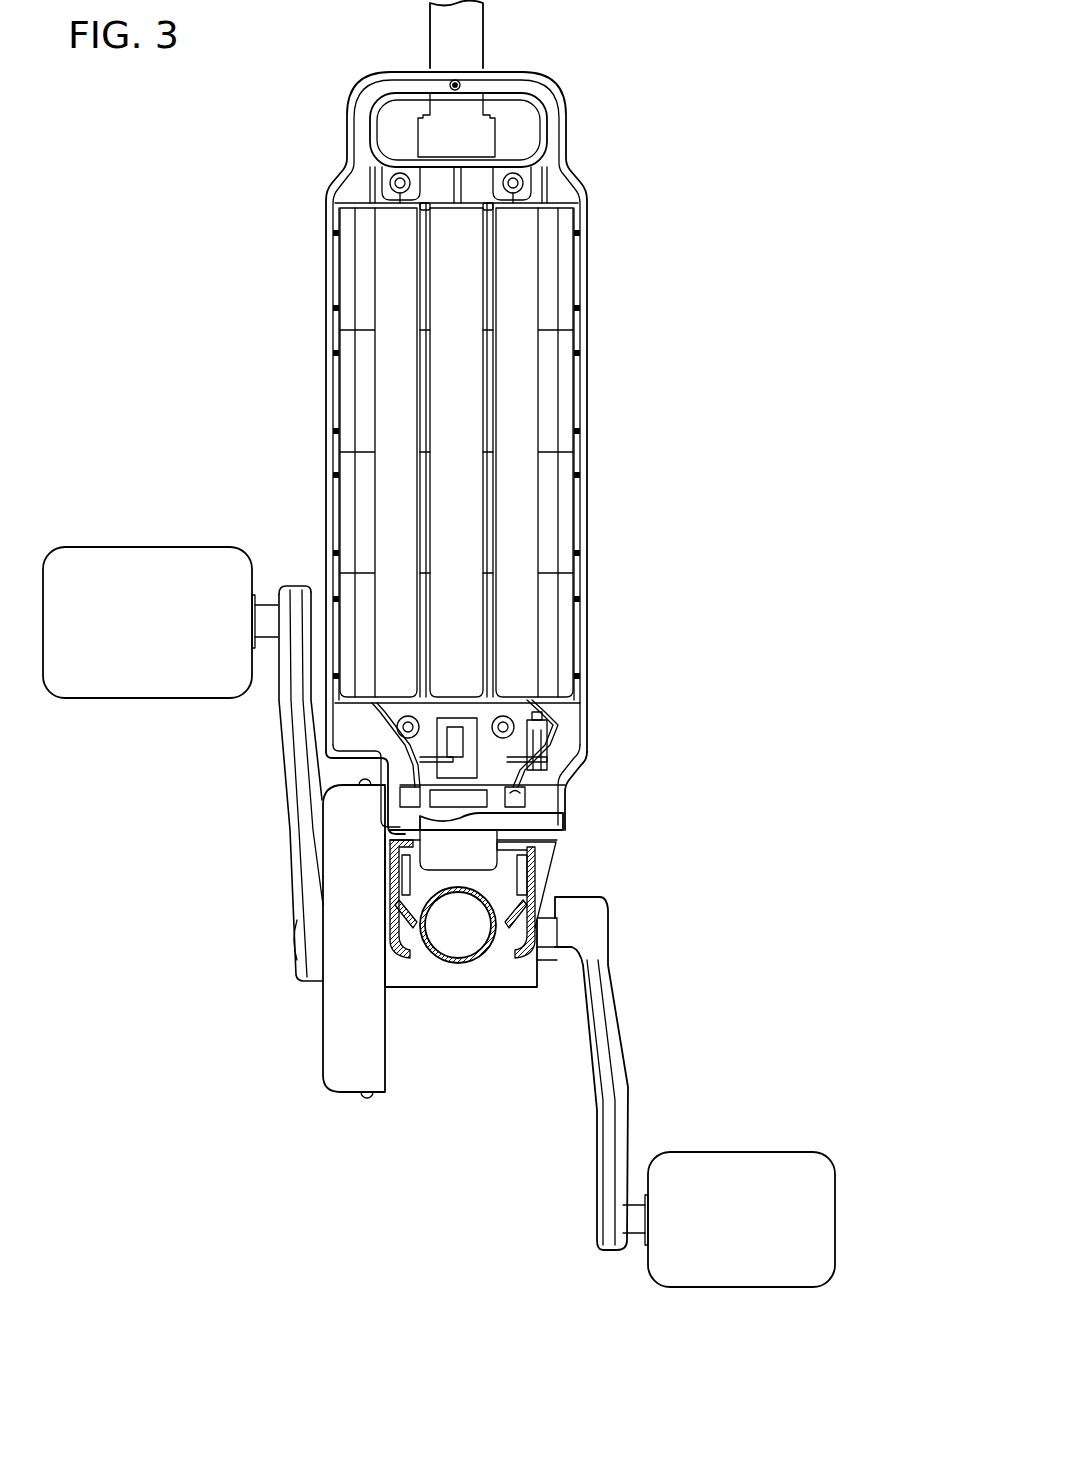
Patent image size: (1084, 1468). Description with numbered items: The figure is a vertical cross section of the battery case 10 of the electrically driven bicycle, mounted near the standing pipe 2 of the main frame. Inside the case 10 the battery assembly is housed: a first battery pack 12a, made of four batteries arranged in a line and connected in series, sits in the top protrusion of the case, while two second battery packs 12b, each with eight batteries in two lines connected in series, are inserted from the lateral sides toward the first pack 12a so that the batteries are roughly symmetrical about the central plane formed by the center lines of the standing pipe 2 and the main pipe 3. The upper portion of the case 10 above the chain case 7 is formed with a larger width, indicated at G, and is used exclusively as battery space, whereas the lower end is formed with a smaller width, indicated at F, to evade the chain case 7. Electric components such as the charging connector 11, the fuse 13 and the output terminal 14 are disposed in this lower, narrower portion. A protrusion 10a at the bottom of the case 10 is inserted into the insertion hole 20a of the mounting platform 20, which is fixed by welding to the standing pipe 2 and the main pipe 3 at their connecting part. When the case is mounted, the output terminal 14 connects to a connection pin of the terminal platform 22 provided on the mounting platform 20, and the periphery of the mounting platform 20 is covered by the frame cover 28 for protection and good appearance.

The standing pipe 2 is at (467, 28).
The battery case 10 is at (596, 234).
The protrusion 10a is at (467, 843).
The first battery pack 12a is at (483, 283).
The second battery packs 12b is at (365, 384).
The charging connector 11 is at (483, 693).
The fuse 13 is at (512, 775).
The output terminal 14 is at (513, 803).
The terminal platform 22 is at (540, 856).
The mounting platform 20 is at (530, 870).
The insertion hole 20a is at (398, 905).
The frame cover 28 is at (543, 908).
The chain case 7 is at (348, 1032).
The main pipe 3 is at (458, 963).
The upper wider portion G is at (318, 727).
The lower narrower portion F is at (380, 773).